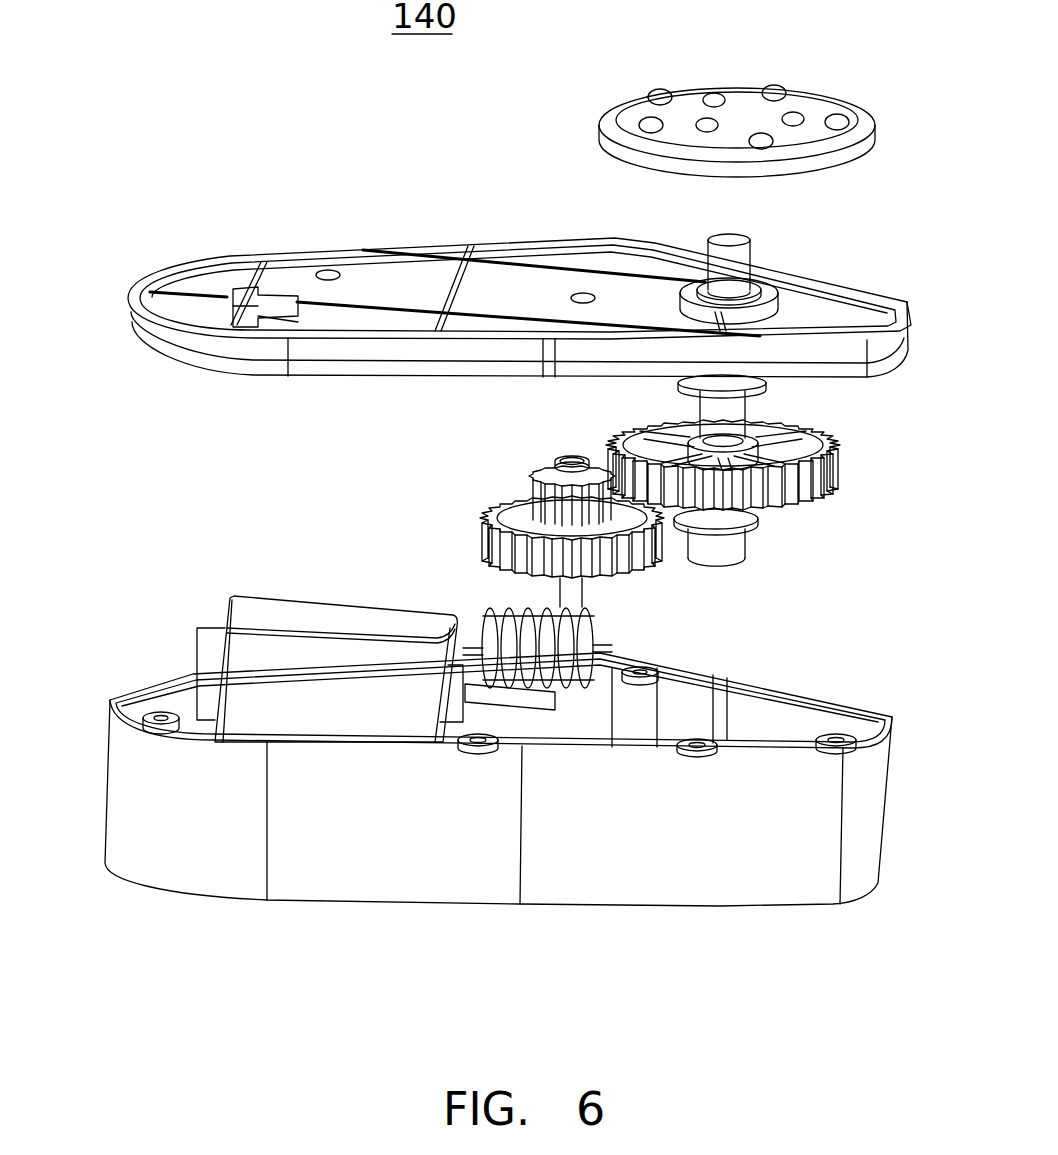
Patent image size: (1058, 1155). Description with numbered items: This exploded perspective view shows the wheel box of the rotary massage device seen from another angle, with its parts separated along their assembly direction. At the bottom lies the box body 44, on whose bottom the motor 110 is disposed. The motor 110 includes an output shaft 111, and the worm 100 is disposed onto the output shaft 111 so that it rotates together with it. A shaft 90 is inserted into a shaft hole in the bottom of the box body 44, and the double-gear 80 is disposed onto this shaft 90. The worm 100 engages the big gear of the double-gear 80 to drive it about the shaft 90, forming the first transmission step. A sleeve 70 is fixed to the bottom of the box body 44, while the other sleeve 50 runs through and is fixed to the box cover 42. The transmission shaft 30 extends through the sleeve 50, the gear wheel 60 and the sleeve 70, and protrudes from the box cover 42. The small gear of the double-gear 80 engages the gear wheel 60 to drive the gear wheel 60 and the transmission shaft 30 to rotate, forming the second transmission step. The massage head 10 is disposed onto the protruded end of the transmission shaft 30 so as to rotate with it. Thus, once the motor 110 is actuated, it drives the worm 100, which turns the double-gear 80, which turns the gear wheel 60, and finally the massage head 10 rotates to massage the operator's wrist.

The massage head 10 is at (745, 115).
The box cover 42 is at (530, 295).
The transmission shaft 30 is at (745, 272).
The sleeve 50 is at (765, 390).
The gear wheel 60 is at (807, 487).
The sleeve 70 is at (733, 543).
The double-gear 80 is at (485, 527).
The shaft 90 is at (560, 463).
The worm 100 is at (487, 617).
The motor 110 is at (205, 645).
The output shaft 111 is at (520, 694).
The box body 44 is at (118, 752).